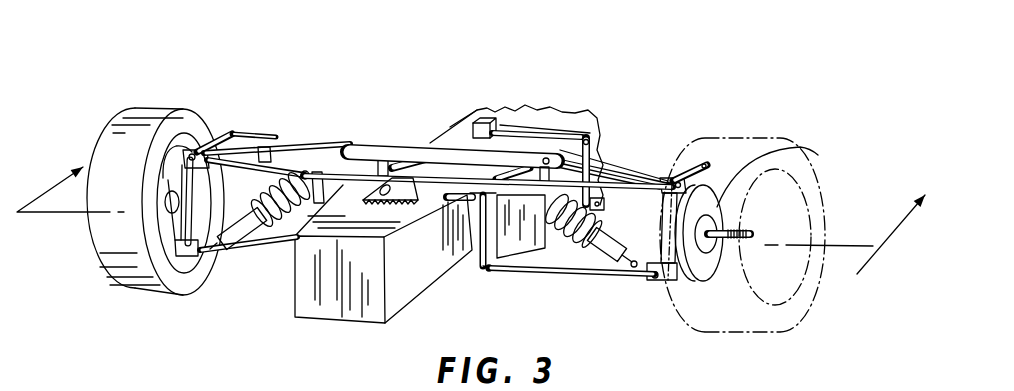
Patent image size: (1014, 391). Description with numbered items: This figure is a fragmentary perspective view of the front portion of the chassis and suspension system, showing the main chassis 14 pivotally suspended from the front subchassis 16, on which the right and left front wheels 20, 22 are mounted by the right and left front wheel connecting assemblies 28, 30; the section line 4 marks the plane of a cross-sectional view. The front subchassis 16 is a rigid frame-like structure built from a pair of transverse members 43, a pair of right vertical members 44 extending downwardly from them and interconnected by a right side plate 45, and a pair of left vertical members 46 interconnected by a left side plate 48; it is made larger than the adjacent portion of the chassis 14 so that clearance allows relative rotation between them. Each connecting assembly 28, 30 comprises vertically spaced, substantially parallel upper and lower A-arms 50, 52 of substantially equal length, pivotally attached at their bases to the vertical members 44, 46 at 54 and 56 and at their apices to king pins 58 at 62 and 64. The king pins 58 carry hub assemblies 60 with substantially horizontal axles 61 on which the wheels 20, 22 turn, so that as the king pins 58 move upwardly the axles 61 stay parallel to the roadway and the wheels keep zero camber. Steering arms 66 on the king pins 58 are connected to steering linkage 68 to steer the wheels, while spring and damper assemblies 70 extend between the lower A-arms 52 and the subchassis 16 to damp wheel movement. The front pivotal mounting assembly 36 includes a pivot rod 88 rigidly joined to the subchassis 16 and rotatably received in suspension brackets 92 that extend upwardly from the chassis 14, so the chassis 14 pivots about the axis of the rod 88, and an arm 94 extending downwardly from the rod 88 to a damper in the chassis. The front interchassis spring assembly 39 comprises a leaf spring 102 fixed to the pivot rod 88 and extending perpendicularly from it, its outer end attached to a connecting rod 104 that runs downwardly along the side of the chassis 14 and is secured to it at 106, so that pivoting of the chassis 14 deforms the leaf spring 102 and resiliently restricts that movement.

The section line 4- 4 is at (471, 227).
The chassis 14 is at (581, 105).
The front subchassis 16 is at (444, 197).
The right front wheel 20 is at (125, 130).
The left front wheel 22 is at (855, 174).
The right front wheel connecting assembly 28 is at (224, 276).
The left front wheel connecting assembly 30 is at (614, 294).
The front pivotal mounting assembly 36 is at (397, 150).
The front interchassis spring assembly 39 is at (527, 109).
The transverse members 43 is at (415, 163).
The right vertical members 44 is at (320, 192).
The right side plate 45 is at (318, 180).
The left vertical members 46 is at (535, 190).
The left side plate 48 is at (510, 227).
The upper A-arms 50 is at (247, 133).
The lower A-arms 52 is at (262, 257).
The pivotal attachment of upper A-arms 54 is at (265, 157).
The pivotal attachment of lower A-arms 56 is at (587, 142).
The king pins 58 is at (180, 170).
The hub assemblies 60 is at (800, 147).
The axles 61 is at (742, 210).
The pivotal attachment of upper A-arms to king pins 62 is at (659, 235).
The pivotal attachment of lower A-arms to king pins 64 is at (188, 245).
The steering arms 66 is at (195, 150).
The steering linkage 68 is at (232, 134).
The spring and damper assemblies 70 is at (575, 245).
The pivot rod 88 is at (467, 133).
The suspension brackets 92 is at (400, 200).
The arm 94 is at (455, 147).
The leaf spring 102 is at (544, 159).
The connecting rod 104 is at (622, 172).
The attachment of connecting rod to chassis 106 is at (597, 204).